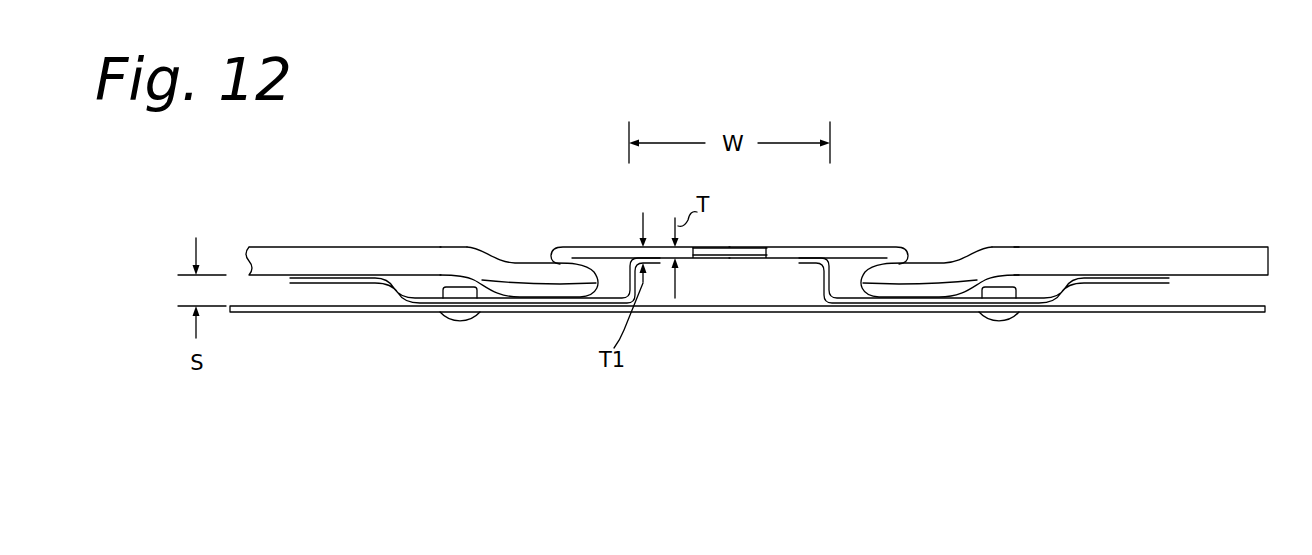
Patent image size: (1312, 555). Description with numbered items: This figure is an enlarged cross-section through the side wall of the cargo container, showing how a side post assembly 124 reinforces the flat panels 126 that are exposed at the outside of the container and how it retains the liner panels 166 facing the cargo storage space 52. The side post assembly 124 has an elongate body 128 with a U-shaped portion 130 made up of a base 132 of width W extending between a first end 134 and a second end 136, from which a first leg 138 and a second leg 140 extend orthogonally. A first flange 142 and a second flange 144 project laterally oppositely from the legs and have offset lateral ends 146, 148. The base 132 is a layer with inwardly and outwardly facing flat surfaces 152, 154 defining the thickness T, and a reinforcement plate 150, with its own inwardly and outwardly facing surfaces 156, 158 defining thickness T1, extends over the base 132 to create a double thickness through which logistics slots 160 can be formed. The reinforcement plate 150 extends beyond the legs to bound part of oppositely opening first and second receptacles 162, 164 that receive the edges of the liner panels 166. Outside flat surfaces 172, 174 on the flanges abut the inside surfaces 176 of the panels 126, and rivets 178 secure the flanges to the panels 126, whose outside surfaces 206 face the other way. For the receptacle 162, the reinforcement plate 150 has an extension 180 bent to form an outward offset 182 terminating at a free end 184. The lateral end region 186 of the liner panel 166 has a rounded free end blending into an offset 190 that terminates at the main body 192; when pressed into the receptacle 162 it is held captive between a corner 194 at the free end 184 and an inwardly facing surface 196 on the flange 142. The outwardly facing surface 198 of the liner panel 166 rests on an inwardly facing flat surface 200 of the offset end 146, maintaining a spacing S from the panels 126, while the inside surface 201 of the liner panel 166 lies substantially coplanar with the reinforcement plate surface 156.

The cargo storage space 52 is at (760, 85).
The side post assembly 124 is at (828, 202).
The flat panel 126 is at (1222, 312).
The elongate body 128 is at (760, 262).
The U-shaped portion 130 is at (787, 268).
The base 132 is at (697, 260).
The first end 134 is at (625, 248).
The second end 136 is at (858, 262).
The first leg 138 is at (560, 267).
The second leg 140 is at (897, 255).
The first flange 142 is at (553, 292).
The second flange 144 is at (924, 312).
The offset lateral end 146 is at (300, 262).
The offset lateral end 148 is at (1135, 262).
The reinforcement plate 150 is at (832, 260).
The inwardly facing flat surface 152 is at (777, 249).
The outwardly facing flat surface 154 is at (640, 303).
The inwardly facing flat surface 156 is at (834, 250).
The outwardly facing flat surface 158 is at (814, 288).
The logistics slot 160 is at (745, 262).
The first receptacle 162 is at (452, 322).
The second receptacle 164 is at (985, 272).
The liner panel 166 is at (365, 262).
The outside flat surface 172 is at (412, 303).
The outside flat surface 174 is at (1042, 300).
The inside surface 176 is at (1143, 306).
The rivet 178 is at (478, 296).
The extension 180 is at (560, 250).
The outward offset 182 is at (543, 250).
The free end 184 is at (515, 295).
The lateral end region 186 is at (568, 308).
The offset 190 is at (535, 264).
The main body 192 is at (348, 280).
The corner 194 is at (485, 282).
The inwardly facing surface 196 is at (386, 290).
The outwardly facing surface 198 is at (263, 278).
The inwardly facing flat surface 200 is at (290, 278).
The inside surface 201 is at (1068, 284).
The outside surface 206 is at (1181, 312).